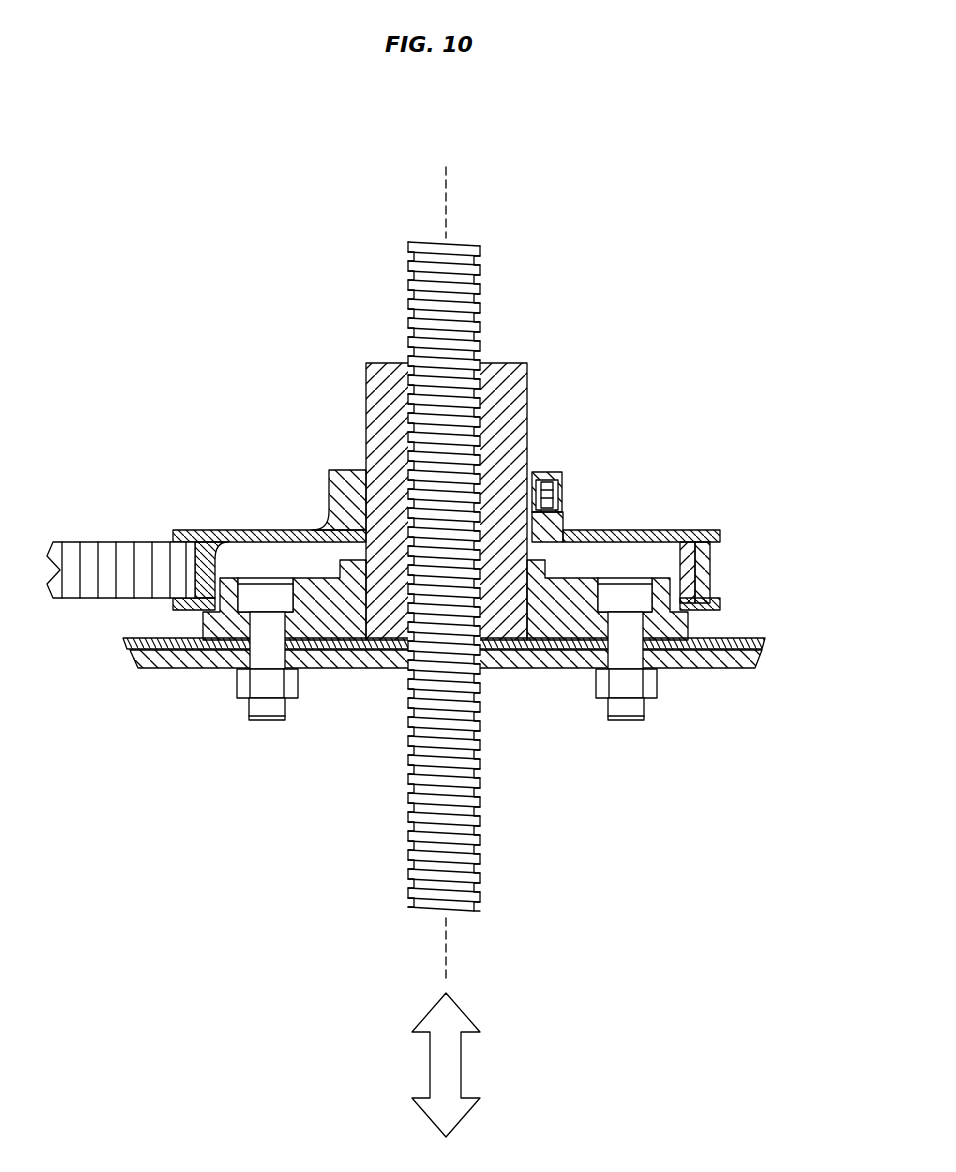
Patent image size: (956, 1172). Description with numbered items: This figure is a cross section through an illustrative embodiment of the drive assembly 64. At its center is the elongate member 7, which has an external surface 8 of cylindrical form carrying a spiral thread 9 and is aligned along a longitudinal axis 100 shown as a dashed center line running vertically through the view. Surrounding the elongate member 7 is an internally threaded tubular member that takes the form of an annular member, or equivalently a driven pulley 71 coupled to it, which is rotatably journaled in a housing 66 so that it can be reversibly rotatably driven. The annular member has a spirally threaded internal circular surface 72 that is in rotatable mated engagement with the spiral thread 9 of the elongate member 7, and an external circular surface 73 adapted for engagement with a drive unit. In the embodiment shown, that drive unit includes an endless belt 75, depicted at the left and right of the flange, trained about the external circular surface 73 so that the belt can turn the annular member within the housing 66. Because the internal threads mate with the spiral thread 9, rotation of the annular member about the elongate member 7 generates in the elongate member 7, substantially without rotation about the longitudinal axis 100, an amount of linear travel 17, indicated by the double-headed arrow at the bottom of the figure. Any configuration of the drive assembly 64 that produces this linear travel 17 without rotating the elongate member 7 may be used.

The longitudinal axis 100 is at (446, 555).
The elongate member 7 is at (451, 571).
The external surface 8 is at (430, 297).
The spiral thread 9 is at (412, 338).
The spirally threaded internal circular surface 72 is at (412, 410).
The driven pulley 71 is at (275, 530).
The endless belt 75 is at (100, 560).
The external circular surface 73 is at (713, 543).
The housing 66 is at (690, 630).
The drive assembly 64 is at (650, 304).
The amount of linear travel 17 is at (446, 1065).